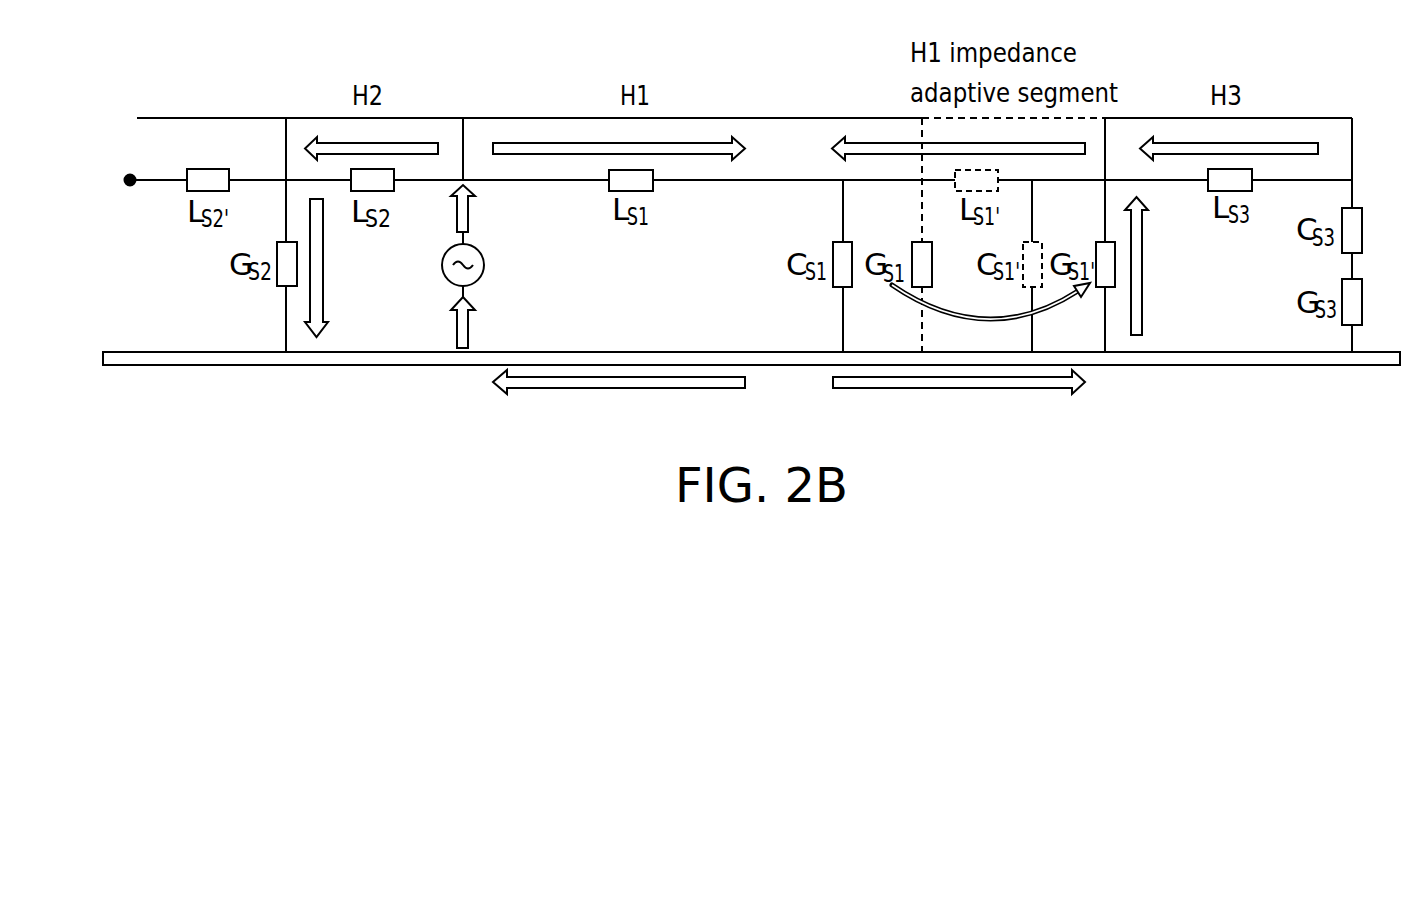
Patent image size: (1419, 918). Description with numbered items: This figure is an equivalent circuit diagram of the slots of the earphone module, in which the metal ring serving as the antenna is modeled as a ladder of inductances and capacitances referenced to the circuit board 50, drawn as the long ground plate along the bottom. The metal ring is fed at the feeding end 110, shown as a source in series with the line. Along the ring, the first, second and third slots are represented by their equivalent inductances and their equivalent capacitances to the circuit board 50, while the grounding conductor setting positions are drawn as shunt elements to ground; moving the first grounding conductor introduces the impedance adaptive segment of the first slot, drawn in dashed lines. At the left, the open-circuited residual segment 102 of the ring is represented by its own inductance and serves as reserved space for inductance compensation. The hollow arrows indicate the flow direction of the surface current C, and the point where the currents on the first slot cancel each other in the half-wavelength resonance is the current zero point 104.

The circuit board 50 is at (167, 365).
The open-circuited residual segment 102 is at (177, 135).
The current zero point 104 is at (811, 266).
The feeding end 110 is at (481, 252).
The surface current C is at (707, 140).